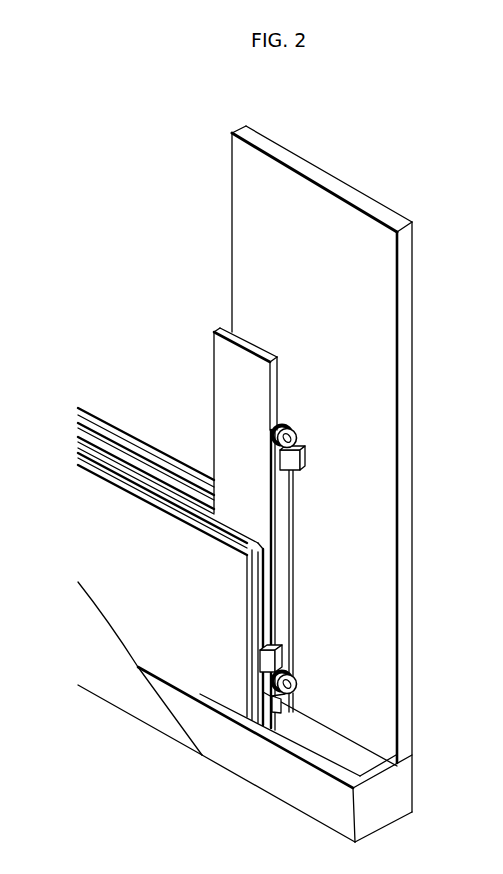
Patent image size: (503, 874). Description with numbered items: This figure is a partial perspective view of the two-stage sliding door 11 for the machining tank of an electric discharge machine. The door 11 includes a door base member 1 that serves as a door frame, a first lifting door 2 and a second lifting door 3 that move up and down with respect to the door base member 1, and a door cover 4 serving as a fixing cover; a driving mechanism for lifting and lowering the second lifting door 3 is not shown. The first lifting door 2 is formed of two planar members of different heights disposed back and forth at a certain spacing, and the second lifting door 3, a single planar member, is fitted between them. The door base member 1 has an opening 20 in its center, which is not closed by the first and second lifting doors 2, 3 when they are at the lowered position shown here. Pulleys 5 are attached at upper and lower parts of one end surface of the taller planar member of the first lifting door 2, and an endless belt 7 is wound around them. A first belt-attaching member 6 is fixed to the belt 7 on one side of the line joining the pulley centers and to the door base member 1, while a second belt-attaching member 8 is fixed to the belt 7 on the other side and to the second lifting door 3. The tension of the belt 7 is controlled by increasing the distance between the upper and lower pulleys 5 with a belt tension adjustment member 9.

The opening 20 is at (195, 194).
The door base member 1 is at (423, 307).
The first lifting door 2 is at (205, 341).
The second lifting door 3 is at (252, 534).
The door cover 4 is at (165, 750).
The pulley 5 is at (310, 426).
The first belt-attaching member 6 is at (318, 461).
The endless belt 7 is at (308, 543).
The second belt-attaching member 8 is at (303, 656).
The belt tension adjustment member 9 is at (301, 705).
The door 11 is at (109, 686).